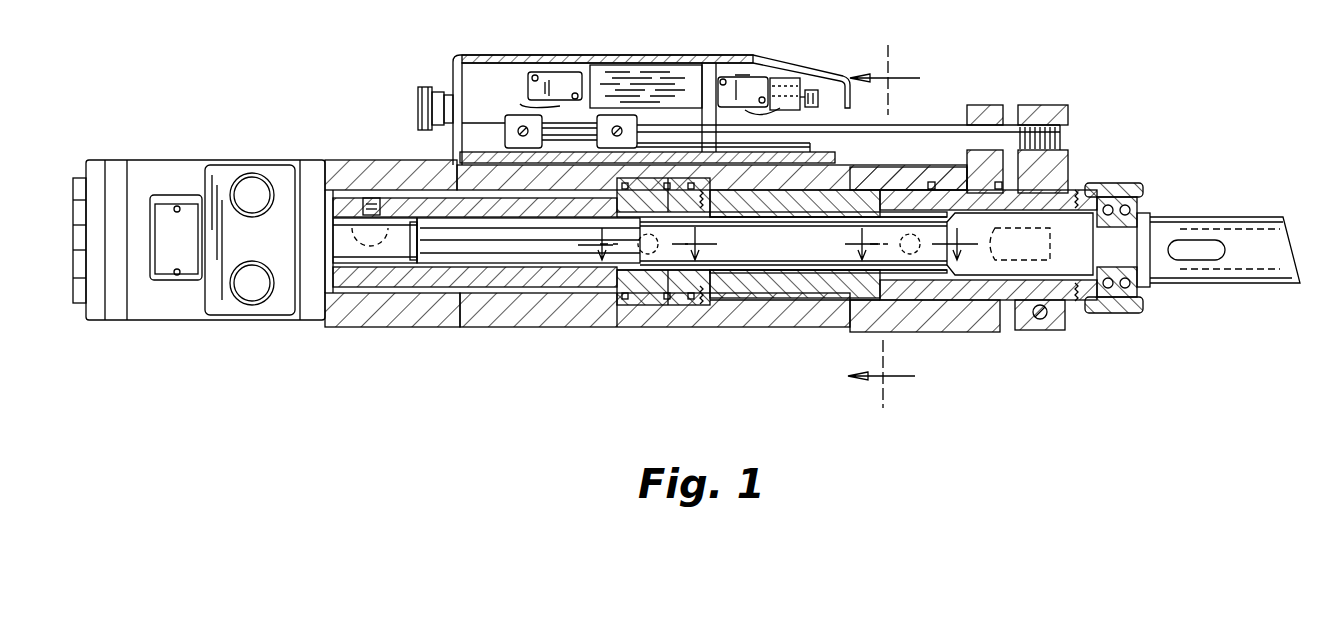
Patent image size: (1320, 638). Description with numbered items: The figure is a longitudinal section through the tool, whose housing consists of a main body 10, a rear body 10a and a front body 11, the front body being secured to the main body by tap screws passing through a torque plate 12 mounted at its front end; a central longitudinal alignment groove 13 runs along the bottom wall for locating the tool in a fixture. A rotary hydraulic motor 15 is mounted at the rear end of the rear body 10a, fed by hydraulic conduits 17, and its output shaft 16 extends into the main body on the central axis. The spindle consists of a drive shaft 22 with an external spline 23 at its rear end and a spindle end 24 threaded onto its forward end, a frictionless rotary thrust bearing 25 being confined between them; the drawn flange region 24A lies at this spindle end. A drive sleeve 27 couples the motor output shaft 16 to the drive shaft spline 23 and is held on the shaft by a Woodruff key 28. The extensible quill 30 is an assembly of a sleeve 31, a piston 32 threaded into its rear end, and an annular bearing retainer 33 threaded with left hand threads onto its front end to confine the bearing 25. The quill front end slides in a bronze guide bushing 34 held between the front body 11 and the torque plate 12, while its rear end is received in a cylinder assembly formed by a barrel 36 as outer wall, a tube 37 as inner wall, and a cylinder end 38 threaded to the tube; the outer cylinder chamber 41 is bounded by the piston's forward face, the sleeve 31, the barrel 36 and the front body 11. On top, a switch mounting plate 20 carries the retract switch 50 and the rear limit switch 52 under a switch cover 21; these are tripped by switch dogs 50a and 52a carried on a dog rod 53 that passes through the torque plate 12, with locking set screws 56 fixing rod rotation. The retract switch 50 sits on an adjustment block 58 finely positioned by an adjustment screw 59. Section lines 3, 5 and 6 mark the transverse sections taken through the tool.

The main body 10 is at (548, 328).
The rear body 10a is at (420, 310).
The front body 11 is at (930, 320).
The torque plate 12 is at (985, 105).
The central longitudinal alignment groove 13 is at (588, 322).
The rotary hydraulic motor 15 is at (175, 170).
The output shaft 16 is at (373, 258).
The hydraulic conduits 17 is at (258, 178).
The switch mounting plate 20 is at (676, 68).
The switch cover 21 is at (490, 55).
The drive shaft 22 is at (750, 272).
The external spline 23 is at (530, 262).
The spindle end 24 is at (1228, 218).
The shaft flange 24A is at (1145, 285).
The frictionless rotary thrust bearing 25 is at (1140, 210).
The drive sleeve 27 is at (487, 287).
The Woodruff key 28 is at (372, 198).
The extensible quill 30 is at (1073, 302).
The sleeve 31 is at (842, 300).
The piston 32 is at (678, 300).
The annular bearing retainer 33 is at (1128, 312).
The bronze guide bushing 34 is at (992, 322).
The barrel 36 is at (716, 305).
The tube 37 is at (805, 265).
The cylinder end 38 is at (648, 300).
The outer cylinder chamber 41 is at (797, 302).
The retract switch 50 is at (752, 82).
The switch dog 50a is at (625, 115).
The rear limit switch 52 is at (548, 75).
The switch dog 52a is at (505, 131).
The dog rod 53 is at (912, 130).
The locking set screws 56 is at (1065, 135).
The adjustment block 58 is at (709, 68).
The adjustment screw 59 is at (812, 90).
The section line 3- 3 is at (884, 226).
The section line 5- 5 is at (647, 241).
The section line 6- 6 is at (910, 242).